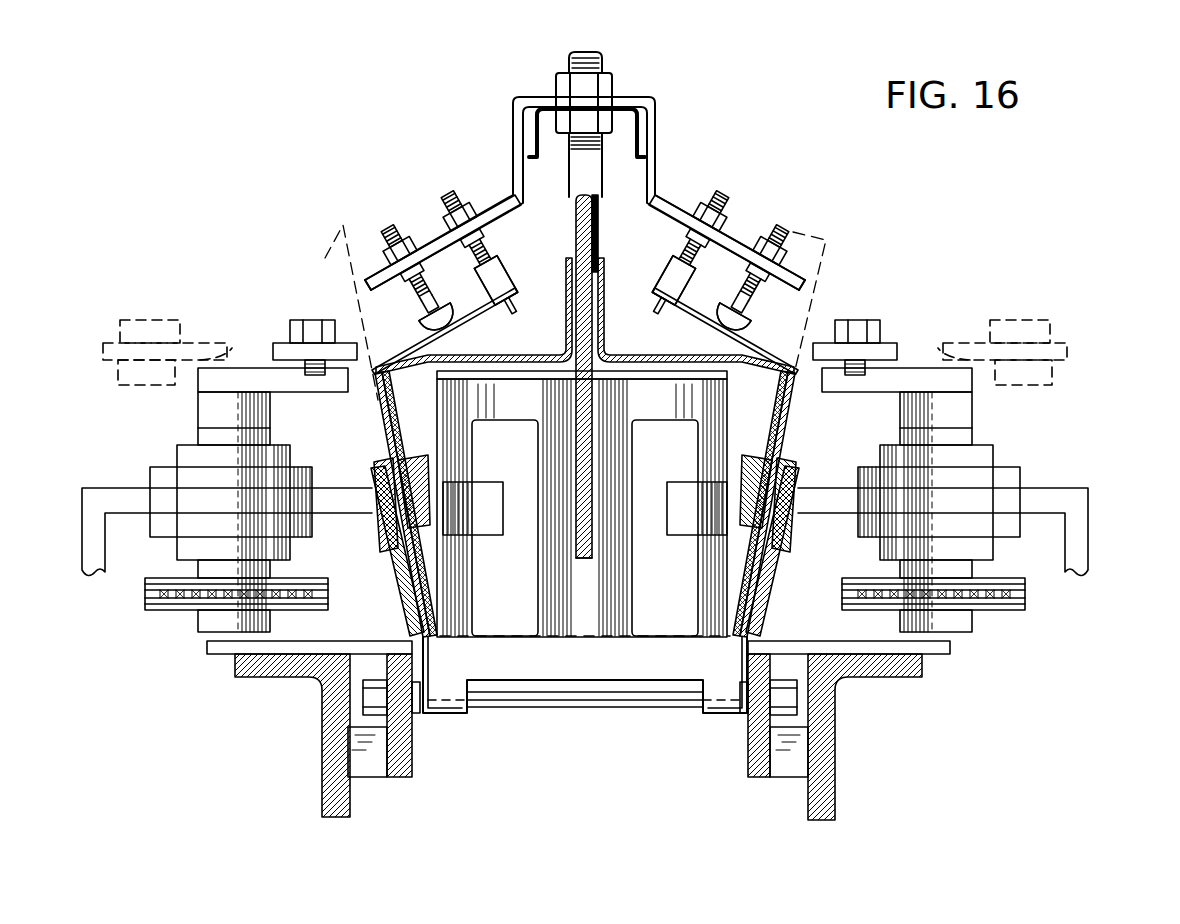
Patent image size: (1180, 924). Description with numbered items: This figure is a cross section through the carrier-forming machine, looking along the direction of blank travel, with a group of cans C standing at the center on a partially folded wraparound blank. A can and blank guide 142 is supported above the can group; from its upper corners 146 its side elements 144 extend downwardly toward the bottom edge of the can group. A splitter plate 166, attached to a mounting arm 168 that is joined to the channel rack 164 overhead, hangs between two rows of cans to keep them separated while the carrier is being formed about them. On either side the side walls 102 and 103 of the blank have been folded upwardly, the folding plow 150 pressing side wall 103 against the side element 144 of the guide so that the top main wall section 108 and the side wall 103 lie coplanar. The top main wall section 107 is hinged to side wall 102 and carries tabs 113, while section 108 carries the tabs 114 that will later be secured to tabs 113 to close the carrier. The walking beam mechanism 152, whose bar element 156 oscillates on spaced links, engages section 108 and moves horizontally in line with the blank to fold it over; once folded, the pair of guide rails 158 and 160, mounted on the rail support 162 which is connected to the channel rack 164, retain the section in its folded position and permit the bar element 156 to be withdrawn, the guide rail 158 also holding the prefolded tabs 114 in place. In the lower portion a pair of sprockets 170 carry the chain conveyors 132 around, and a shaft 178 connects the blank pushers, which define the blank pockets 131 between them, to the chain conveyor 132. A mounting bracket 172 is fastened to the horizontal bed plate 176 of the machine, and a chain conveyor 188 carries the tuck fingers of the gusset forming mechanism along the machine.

The side wall 102 is at (380, 452).
The side wall 103 is at (778, 464).
The top main wall section 107 is at (420, 345).
The top main wall section 108 is at (722, 337).
The tabs 113 is at (512, 315).
The tabs 114 is at (662, 323).
The blank pockets 131 is at (675, 460).
The chain conveyors 132 is at (412, 730).
The can and blank guide 142 is at (591, 289).
The side elements 144 is at (784, 440).
The upper corners 146 is at (790, 400).
The folding plow 150 is at (762, 624).
The walking beam mechanism 152 is at (1020, 439).
The bar element 156 is at (857, 353).
The guide rail 158 is at (458, 222).
The guide rail 160 is at (437, 312).
The rail support 162 is at (668, 198).
The channel rack 164 is at (625, 108).
The splitter plate 166 is at (586, 537).
The mounting arm 168 is at (600, 190).
The sprockets 170 is at (760, 752).
The mounting bracket 172 is at (826, 795).
The bed plate 176 is at (950, 648).
The shaft 178 is at (562, 698).
The chain conveyor 188 is at (697, 533).
The cans C is at (446, 395).